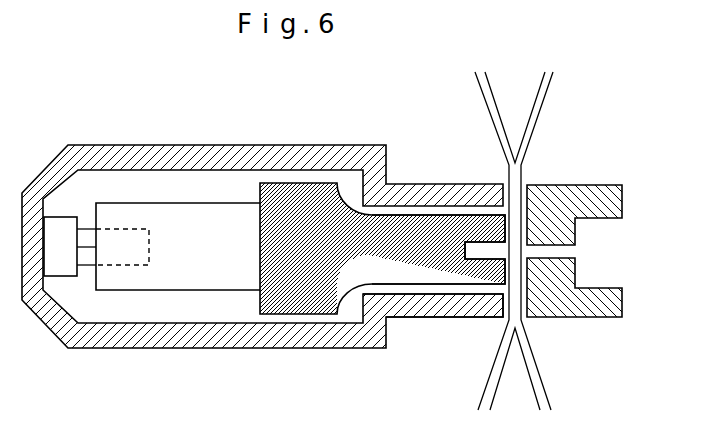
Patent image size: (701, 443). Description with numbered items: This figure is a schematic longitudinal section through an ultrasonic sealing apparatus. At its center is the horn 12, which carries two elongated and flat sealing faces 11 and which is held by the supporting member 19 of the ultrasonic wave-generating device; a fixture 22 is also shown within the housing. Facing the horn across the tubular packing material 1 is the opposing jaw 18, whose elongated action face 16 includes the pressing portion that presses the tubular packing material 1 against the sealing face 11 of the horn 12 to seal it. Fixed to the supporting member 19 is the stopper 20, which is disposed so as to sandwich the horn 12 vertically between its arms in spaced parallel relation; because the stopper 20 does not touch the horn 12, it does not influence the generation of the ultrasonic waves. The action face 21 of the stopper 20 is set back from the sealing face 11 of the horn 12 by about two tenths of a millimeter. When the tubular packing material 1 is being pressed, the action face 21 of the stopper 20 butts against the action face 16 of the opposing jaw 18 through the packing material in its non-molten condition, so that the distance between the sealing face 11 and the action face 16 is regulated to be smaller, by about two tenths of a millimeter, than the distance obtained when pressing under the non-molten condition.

The tubular packing material 1 is at (547, 95).
The sealing face 11 is at (504, 233).
The horn 12 is at (283, 314).
The action face 16 is at (540, 303).
The opposing jaw 18 is at (597, 182).
The supporting member 19 is at (71, 259).
The stopper 20 is at (440, 317).
The action face of the stopper 21 is at (490, 318).
The fixture 22 is at (195, 273).